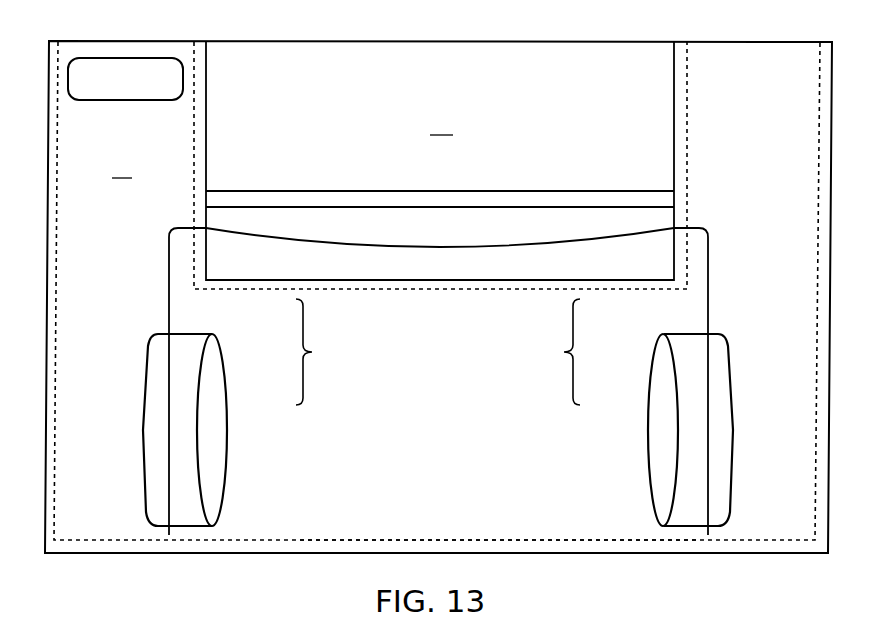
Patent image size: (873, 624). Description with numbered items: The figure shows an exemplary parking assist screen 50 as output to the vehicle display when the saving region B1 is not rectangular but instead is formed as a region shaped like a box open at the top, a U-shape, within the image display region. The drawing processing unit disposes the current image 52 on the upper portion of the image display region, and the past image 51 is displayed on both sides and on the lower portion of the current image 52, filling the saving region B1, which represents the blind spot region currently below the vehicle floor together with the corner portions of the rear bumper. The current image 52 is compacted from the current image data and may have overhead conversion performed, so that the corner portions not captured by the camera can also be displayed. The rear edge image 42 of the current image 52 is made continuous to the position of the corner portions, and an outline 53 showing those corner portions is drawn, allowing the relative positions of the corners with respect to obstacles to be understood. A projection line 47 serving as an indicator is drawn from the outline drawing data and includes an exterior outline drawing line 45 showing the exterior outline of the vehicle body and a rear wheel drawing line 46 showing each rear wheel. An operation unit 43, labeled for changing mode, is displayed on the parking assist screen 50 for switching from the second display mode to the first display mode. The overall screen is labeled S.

The parking assist screen 50 is at (75, 41).
The operation unit 43 is at (123, 58).
The past image 51 is at (437, 291).
The current image 52 is at (440, 165).
The rear edge image 42 is at (253, 247).
The outline 53 is at (171, 226).
The exterior outline drawing line 45 is at (169, 321).
The rear wheel drawing line 46 is at (227, 373).
The projection line 47 is at (438, 352).
The saving region B1 is at (558, 542).
The screen S is at (718, 553).